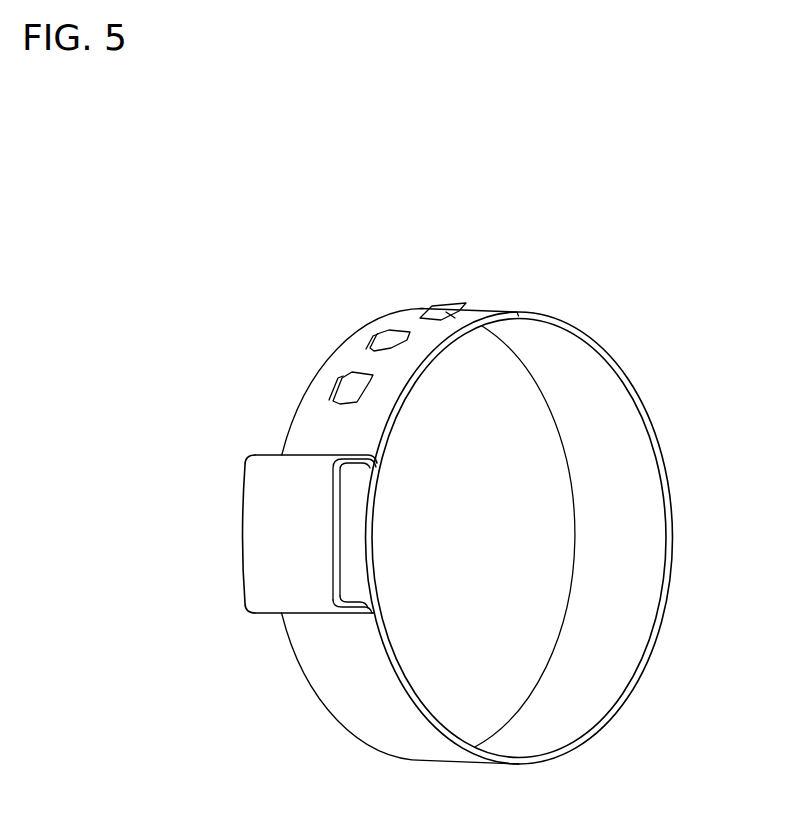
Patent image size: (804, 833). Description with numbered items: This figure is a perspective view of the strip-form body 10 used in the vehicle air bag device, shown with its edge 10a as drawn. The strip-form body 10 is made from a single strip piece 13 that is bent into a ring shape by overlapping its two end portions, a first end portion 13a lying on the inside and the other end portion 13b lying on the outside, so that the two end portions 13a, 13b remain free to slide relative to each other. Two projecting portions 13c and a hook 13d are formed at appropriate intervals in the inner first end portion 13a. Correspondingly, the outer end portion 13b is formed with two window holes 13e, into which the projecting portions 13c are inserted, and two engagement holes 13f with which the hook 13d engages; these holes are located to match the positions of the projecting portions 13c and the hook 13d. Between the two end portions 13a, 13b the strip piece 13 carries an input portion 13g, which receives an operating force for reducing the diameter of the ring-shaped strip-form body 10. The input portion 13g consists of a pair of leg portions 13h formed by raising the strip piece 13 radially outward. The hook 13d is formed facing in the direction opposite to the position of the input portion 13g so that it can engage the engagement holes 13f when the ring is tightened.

The strip-form body 10 is at (653, 352).
The inner edge of lens frame 10a is at (574, 521).
The strip piece 13 is at (631, 703).
The first end portion 13a is at (379, 587).
The other end portion 13b is at (481, 307).
The projecting portions 13c is at (393, 337).
The hook 13d is at (444, 305).
The engagement holes 13f is at (451, 318).
The window holes 13e is at (380, 345).
The input portion 13g is at (232, 593).
The leg portions 13h is at (353, 455).